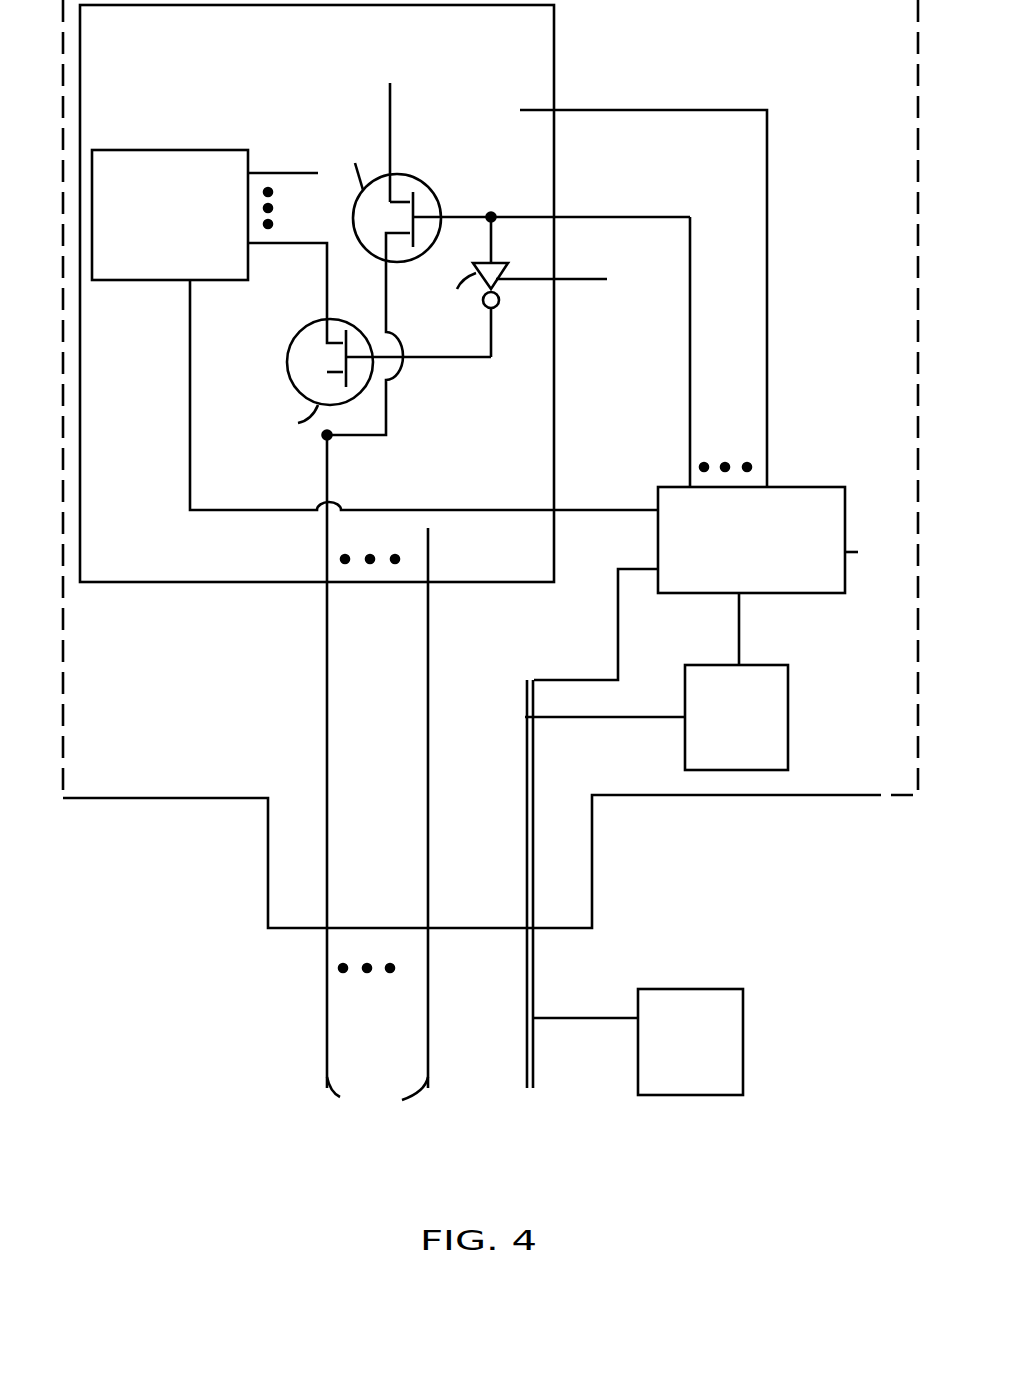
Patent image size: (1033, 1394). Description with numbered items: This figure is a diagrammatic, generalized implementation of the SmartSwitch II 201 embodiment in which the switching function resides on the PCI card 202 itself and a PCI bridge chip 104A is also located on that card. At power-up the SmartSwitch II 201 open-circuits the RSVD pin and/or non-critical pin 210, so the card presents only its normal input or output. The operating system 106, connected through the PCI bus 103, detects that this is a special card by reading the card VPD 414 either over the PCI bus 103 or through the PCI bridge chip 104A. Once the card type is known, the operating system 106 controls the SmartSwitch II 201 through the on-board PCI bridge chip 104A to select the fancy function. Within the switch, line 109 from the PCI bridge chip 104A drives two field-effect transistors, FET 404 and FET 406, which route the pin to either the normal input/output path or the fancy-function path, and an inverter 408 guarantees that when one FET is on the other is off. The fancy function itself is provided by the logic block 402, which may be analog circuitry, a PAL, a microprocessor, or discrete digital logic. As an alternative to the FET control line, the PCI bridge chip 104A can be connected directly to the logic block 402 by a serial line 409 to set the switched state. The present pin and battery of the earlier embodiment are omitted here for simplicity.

The logic block 402 is at (160, 149).
The FET 404 is at (294, 335).
The FET 406 is at (405, 177).
The inverter 408 is at (498, 278).
The serial line 409 is at (549, 507).
The line 109 is at (766, 420).
The SmartSwitch II 201 is at (318, 573).
The PCI card 202 is at (237, 789).
The PCI bus 103 is at (527, 681).
The PCI bridge chip 104A is at (815, 593).
The card VPD 414 is at (788, 747).
The RSVD pin and/or non-critical pin 210 is at (428, 1005).
The operating system 106 is at (725, 1095).